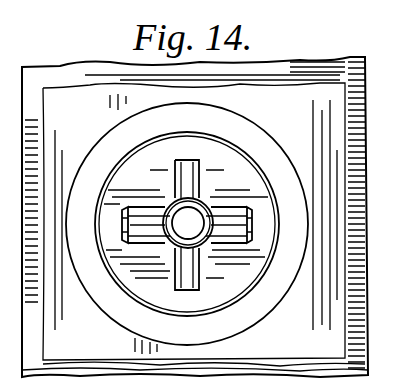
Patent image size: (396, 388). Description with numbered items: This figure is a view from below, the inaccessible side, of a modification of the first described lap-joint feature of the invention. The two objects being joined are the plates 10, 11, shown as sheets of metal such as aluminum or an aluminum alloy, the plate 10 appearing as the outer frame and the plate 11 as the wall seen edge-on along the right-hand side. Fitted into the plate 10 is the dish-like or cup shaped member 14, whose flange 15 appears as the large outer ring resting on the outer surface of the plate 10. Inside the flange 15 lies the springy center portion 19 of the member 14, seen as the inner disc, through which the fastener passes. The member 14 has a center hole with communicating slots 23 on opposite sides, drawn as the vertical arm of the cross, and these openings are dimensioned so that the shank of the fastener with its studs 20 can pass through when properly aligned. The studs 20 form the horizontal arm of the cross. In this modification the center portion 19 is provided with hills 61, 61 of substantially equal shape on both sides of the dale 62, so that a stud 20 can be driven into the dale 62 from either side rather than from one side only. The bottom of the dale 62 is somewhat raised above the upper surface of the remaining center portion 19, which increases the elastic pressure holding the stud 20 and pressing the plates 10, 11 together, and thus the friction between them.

The plate 10 is at (307, 98).
The plate 11 is at (355, 173).
The dish-like member 14 is at (150, 177).
The flange 15 is at (107, 135).
The springy center portion 19 is at (171, 204).
The stud 20 is at (142, 242).
The slot 23 is at (194, 162).
The hill 61 is at (135, 206).
The dale 62 is at (123, 228).